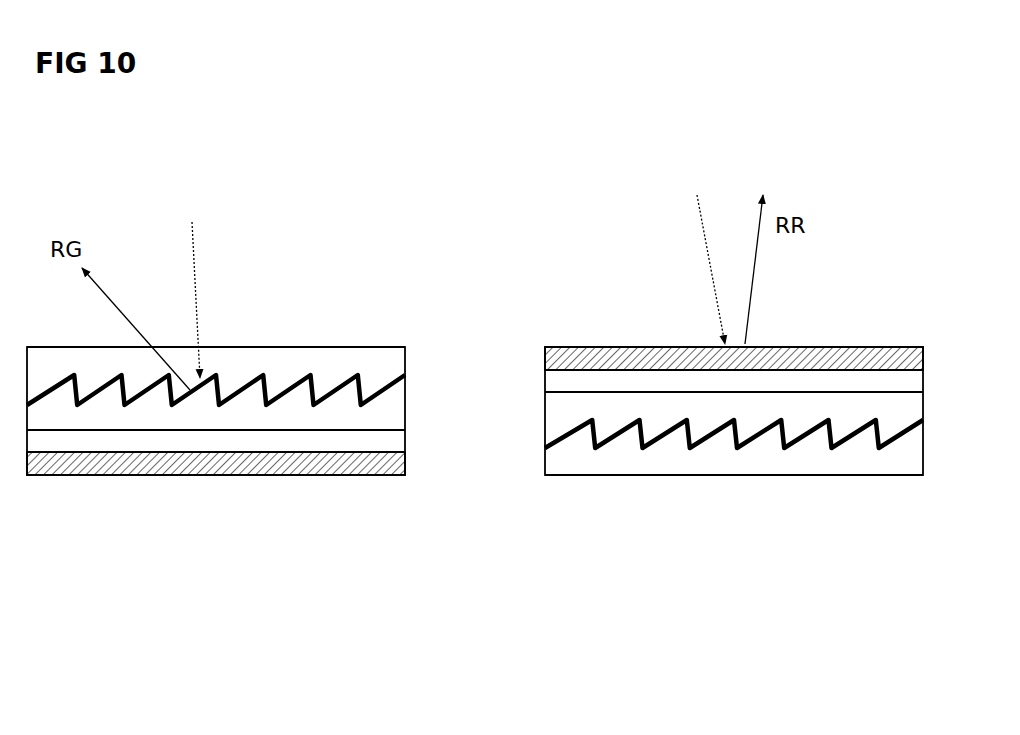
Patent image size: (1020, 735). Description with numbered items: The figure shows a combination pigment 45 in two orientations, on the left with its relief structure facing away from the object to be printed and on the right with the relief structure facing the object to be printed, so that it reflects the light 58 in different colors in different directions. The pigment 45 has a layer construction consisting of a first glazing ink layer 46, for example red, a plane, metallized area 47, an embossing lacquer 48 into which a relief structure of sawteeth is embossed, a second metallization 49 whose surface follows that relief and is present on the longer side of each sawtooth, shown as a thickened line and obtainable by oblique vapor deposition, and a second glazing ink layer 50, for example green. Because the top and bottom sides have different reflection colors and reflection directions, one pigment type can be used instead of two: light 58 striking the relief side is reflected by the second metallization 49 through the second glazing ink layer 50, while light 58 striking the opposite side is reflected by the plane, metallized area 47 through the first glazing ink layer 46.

The pigment 45 is at (360, 278).
The first glazing ink layer 46 is at (406, 463).
The plane, metallized area 47 is at (398, 447).
The embossing lacquer 48 is at (398, 406).
The second metallization 49 is at (64, 372).
The second glazing ink layer 50 is at (287, 356).
The light 58 is at (192, 228).